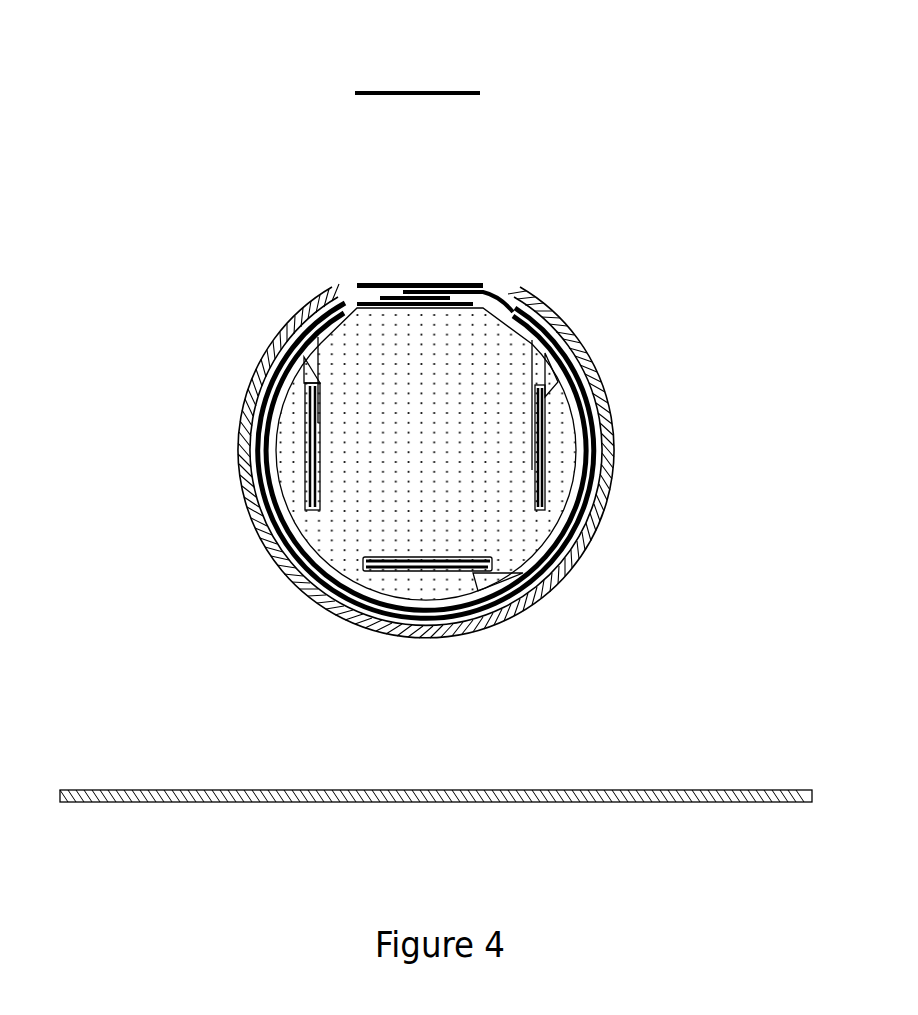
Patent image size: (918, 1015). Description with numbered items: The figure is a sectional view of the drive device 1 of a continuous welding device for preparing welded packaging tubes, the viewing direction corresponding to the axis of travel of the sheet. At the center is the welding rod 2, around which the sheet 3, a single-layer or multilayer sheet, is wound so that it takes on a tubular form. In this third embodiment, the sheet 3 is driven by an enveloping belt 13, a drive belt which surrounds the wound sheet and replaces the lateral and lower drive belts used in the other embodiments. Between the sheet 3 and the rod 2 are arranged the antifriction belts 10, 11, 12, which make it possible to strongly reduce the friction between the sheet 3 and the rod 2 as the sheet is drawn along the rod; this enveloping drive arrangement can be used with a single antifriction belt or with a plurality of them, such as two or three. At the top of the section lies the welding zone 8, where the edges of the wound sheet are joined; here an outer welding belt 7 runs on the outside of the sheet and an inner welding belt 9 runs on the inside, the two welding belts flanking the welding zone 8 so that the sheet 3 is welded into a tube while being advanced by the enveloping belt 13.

The sectional view of the drive device 1 is at (140, 116).
The welding rod 2 is at (478, 355).
The sheet 3 is at (280, 563).
The outer welding belt 7 is at (410, 284).
The welding zone 8 is at (482, 263).
The inner welding belt 9 is at (433, 558).
The antifriction belt 10 is at (524, 576).
The antifriction belt 11 is at (543, 398).
The antifriction belt 12 is at (305, 380).
The enveloping belt 13 is at (406, 634).